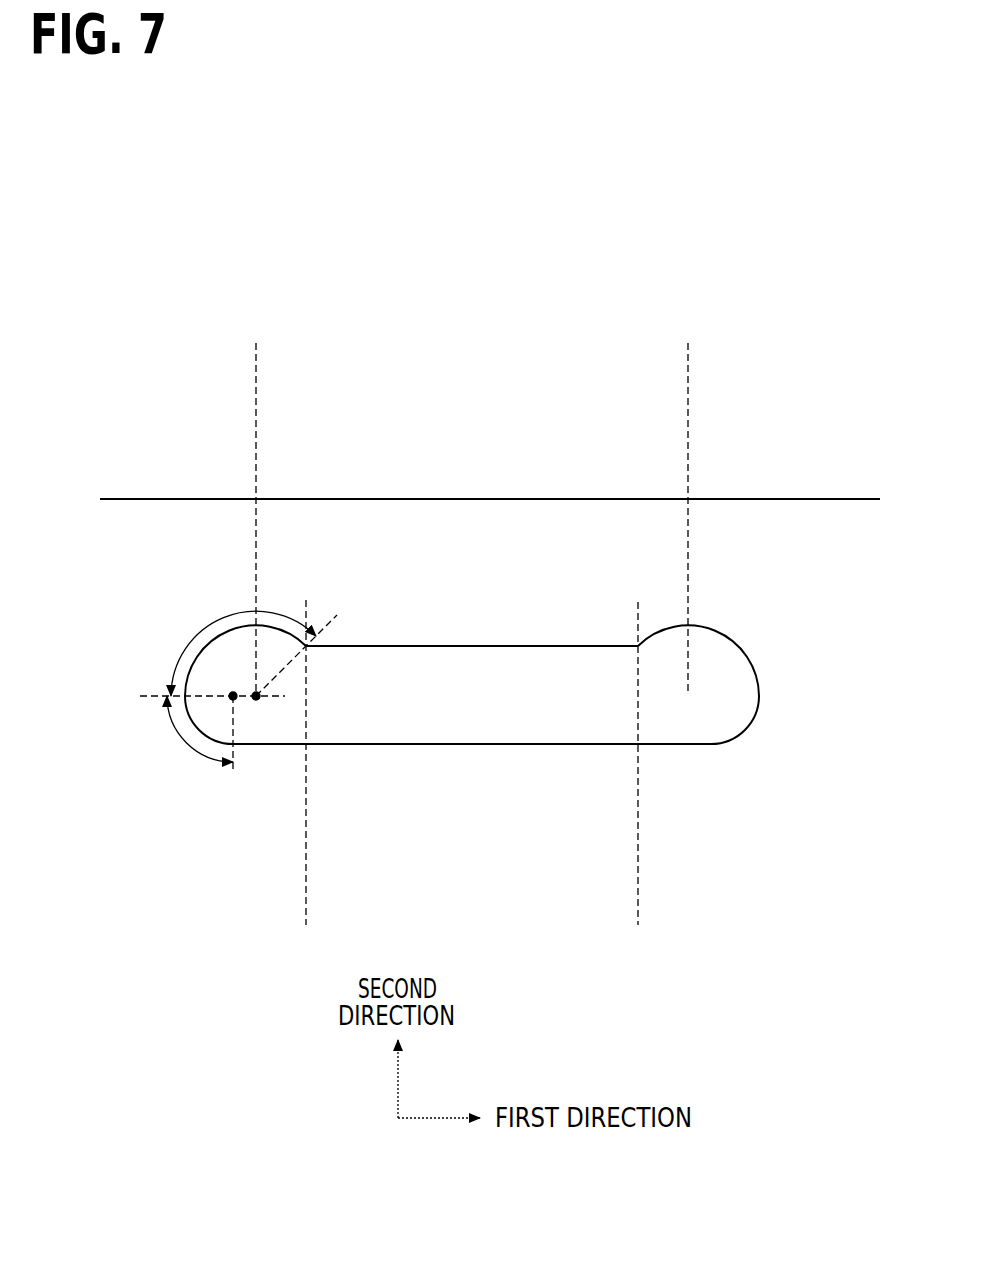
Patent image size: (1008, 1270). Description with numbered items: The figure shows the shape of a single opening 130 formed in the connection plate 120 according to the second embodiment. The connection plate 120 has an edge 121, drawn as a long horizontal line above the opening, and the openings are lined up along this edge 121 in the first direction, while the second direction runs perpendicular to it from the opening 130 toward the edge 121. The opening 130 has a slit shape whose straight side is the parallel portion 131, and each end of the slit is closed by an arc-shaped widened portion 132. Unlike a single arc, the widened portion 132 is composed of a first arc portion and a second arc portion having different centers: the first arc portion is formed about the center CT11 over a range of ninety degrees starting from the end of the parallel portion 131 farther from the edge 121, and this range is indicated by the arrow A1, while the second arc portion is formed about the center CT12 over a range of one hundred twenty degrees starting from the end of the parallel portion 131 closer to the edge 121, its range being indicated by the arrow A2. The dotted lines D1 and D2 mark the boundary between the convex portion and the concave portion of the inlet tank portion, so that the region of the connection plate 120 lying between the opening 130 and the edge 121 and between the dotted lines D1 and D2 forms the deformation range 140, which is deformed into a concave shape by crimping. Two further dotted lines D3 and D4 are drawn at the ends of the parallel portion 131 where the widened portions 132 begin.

The connection plate 120 is at (183, 525).
The edge 121 is at (522, 499).
The deformation range 140 is at (450, 527).
The opening 130 is at (492, 700).
The parallel portion 131 is at (558, 750).
The widened portion 132 is at (205, 643).
The center of the first arc portion CT11 is at (238, 706).
The center of the second arc portion CT12 is at (262, 707).
The arrow indicating range of the first arc portion A1 is at (170, 725).
The arrow indicating range of the second arc portion A2 is at (176, 660).
The dotted line D1 is at (258, 357).
The dotted line D2 is at (690, 357).
The third reference line D3 is at (308, 901).
The fourth reference line D4 is at (640, 901).